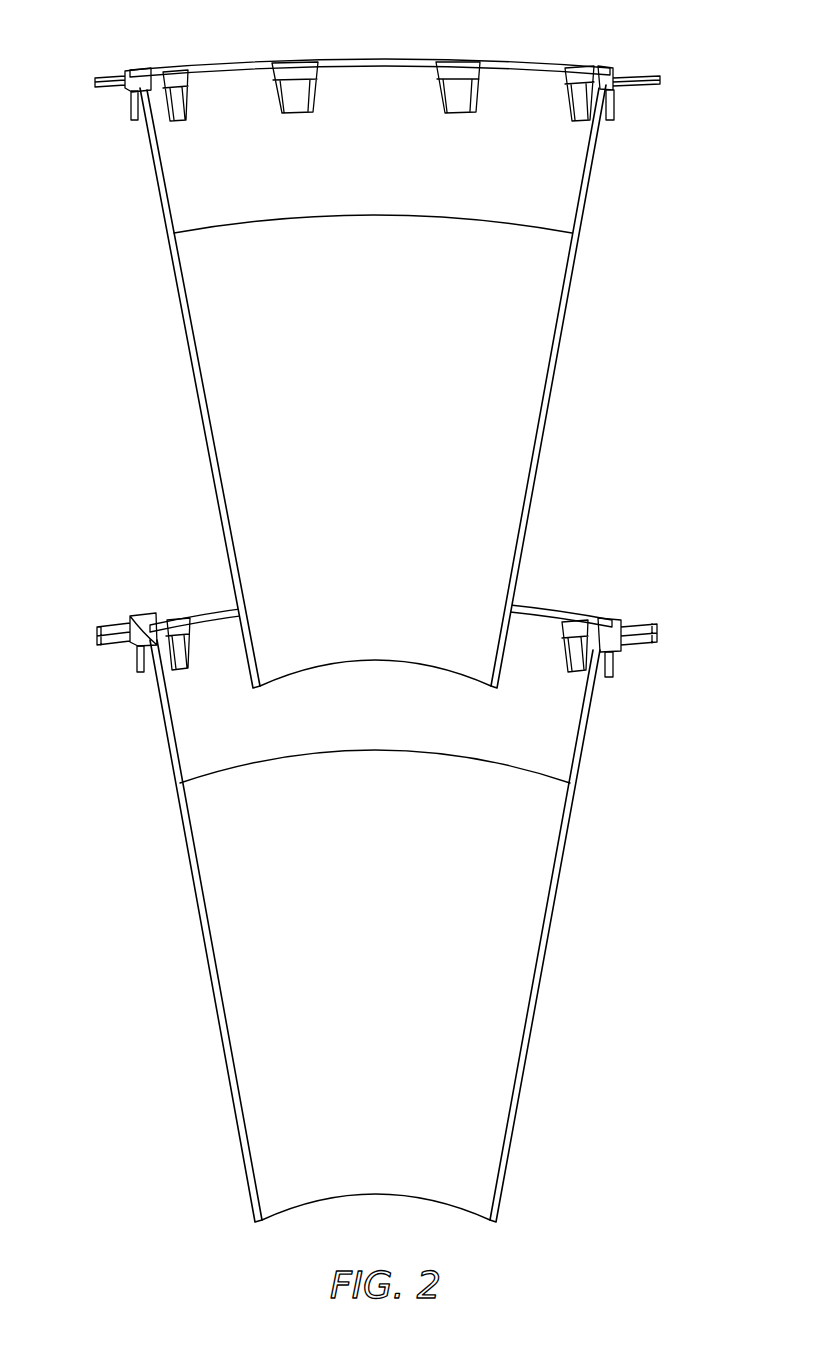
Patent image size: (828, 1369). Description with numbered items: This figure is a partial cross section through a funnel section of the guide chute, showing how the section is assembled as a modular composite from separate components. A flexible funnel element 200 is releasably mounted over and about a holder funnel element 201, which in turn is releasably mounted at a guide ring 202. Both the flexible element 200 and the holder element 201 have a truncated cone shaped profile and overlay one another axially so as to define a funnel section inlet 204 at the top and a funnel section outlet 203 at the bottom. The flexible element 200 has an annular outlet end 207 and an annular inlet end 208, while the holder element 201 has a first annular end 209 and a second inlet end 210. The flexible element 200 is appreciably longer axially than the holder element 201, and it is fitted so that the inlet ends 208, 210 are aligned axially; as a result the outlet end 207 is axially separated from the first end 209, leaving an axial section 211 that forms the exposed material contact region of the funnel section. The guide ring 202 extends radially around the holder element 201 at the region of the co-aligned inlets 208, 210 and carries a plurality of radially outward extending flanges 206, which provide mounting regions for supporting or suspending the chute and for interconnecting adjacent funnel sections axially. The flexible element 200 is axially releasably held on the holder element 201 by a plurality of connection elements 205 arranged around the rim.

The flexible funnel element 200 is at (514, 990).
The holder funnel element 201 is at (564, 725).
The guide ring 202 is at (618, 658).
The funnel section outlet 203 is at (378, 667).
The funnel section inlet 204 is at (520, 64).
The connection elements 205 is at (289, 89).
The radially outward extending flanges 206 is at (636, 630).
The annular outlet end 207 is at (396, 1196).
The annular inlet end 208 is at (149, 623).
The first annular end 209 is at (464, 762).
The second inlet end 210 is at (556, 608).
The axial section 211 is at (160, 784).